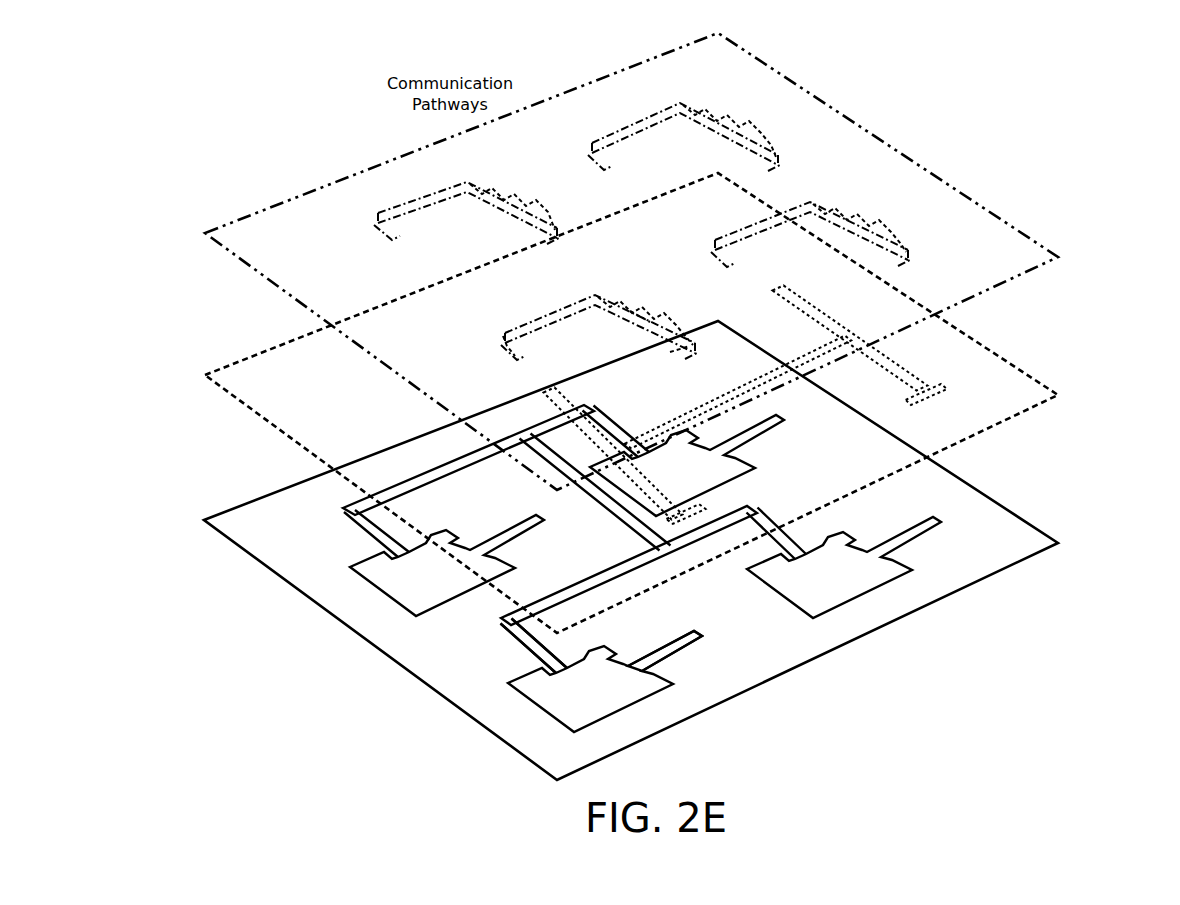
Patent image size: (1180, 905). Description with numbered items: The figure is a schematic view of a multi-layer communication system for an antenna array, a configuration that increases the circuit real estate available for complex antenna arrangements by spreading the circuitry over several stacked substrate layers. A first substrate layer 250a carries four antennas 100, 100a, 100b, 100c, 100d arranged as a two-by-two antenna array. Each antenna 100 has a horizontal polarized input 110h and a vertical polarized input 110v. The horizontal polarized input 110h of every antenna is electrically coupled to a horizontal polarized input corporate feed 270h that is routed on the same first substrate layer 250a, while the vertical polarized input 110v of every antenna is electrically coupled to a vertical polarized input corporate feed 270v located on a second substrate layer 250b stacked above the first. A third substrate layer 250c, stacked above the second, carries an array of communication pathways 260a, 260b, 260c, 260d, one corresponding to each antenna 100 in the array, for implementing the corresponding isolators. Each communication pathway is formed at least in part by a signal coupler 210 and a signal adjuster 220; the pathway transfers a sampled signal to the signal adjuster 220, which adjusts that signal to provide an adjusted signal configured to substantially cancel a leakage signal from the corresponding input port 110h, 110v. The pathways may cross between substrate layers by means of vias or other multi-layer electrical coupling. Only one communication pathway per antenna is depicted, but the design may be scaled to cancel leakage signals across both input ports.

The antenna 100 is at (642, 569).
The antenna 100a is at (555, 703).
The antenna 100b is at (406, 577).
The antenna 100c is at (711, 461).
The antenna 100d is at (790, 586).
The horizontal polarized input 110h is at (526, 646).
The vertical polarized input 110v is at (679, 652).
The signal coupler 210 is at (512, 340).
The signal adjuster 220 is at (637, 307).
The first substrate layer 250a is at (272, 572).
The second substrate layer 250b is at (260, 417).
The third substrate layer 250c is at (250, 270).
The communication pathway 260a is at (560, 311).
The communication pathway 260b is at (434, 199).
The communication pathway 260c is at (645, 124).
The communication pathway 260d is at (812, 211).
The horizontal polarized input corporate feed 270h is at (505, 614).
The vertical polarized input corporate feed 270v is at (908, 362).